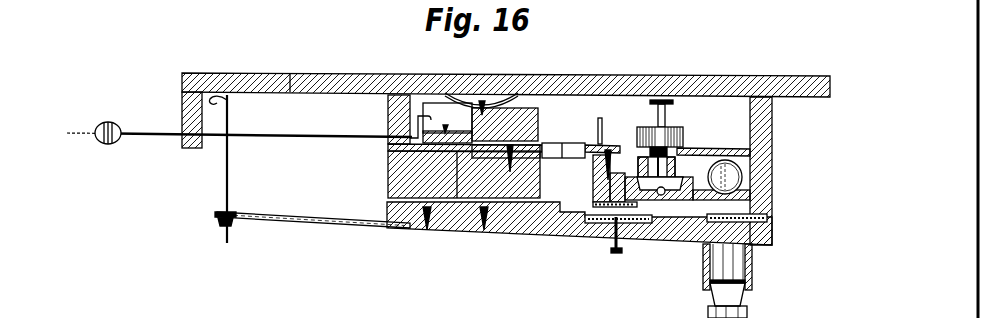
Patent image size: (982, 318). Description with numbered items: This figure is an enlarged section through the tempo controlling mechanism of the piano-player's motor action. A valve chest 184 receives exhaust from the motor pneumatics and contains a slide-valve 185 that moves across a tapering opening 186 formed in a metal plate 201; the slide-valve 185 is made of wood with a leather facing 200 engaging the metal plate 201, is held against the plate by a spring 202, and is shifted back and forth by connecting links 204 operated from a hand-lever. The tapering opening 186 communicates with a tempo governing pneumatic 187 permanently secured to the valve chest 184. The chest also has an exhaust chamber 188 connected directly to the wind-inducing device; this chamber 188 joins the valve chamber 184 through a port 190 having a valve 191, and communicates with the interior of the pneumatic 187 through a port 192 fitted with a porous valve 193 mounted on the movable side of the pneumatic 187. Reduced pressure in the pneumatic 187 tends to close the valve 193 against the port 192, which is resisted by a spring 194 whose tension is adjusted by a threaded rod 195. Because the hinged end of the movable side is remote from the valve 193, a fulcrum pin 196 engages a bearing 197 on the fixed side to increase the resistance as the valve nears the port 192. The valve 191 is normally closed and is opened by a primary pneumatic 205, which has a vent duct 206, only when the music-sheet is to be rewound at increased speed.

The valve chest 184 is at (722, 112).
The slide-valve 185 is at (525, 120).
The tapering opening 186 is at (566, 150).
The tempo governing pneumatic 187 is at (565, 200).
The exhaust chamber 188 is at (705, 163).
The port 190 is at (685, 142).
The valve 191 is at (678, 144).
The port 192 is at (707, 202).
The porous valve 193 is at (757, 245).
The spring 194 is at (318, 228).
The threaded rod 195 is at (224, 214).
The fulcrum pin 196 is at (616, 240).
The bearing 197 is at (626, 228).
The leather facing 200 is at (458, 152).
The metal plate 201 is at (526, 145).
The spring 202 is at (459, 100).
The connecting links 204 is at (280, 140).
The primary pneumatic 205 is at (664, 197).
The vent duct 206 is at (675, 179).